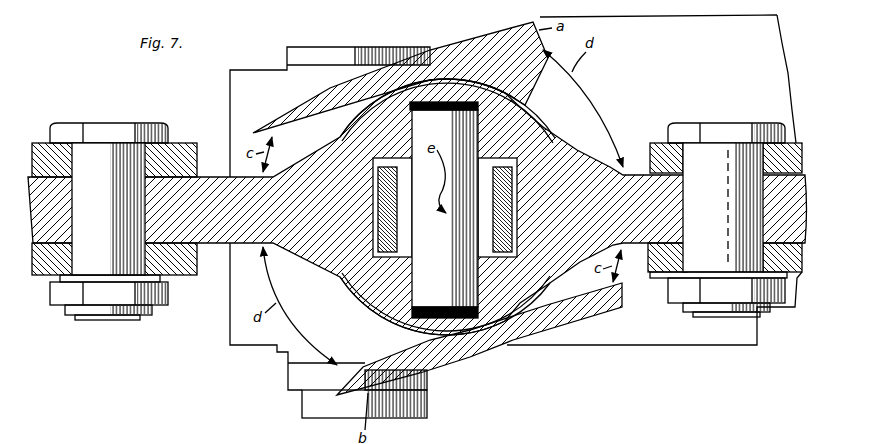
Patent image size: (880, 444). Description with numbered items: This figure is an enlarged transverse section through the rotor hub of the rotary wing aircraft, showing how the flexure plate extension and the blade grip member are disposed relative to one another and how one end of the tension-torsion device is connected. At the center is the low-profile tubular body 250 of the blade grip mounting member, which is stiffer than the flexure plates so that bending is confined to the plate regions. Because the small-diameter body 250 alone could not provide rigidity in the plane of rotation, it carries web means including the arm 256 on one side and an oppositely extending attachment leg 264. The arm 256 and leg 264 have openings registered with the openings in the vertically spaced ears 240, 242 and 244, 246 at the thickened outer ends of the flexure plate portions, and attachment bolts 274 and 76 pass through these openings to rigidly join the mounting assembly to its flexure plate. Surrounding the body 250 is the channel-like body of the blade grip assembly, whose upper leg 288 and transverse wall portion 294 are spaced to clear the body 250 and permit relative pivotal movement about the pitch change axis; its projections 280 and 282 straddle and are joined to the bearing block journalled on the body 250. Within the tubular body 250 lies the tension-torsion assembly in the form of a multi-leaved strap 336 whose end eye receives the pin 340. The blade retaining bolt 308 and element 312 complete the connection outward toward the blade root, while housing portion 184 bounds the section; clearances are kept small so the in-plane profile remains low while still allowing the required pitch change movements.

The bolt 76 is at (730, 128).
The housing 184 is at (779, 20).
The vertically spaced ear 240 is at (183, 148).
The vertically spaced ear 242 is at (181, 272).
The vertically spaced ear 244 is at (793, 140).
The vertically spaced ear 246 is at (797, 278).
The tubular body portion 250 is at (533, 117).
The arm 256 is at (214, 237).
The attachment leg 264 is at (667, 180).
The attachment bolt 274 is at (102, 160).
The projection 280 is at (474, 50).
The projection 282 is at (494, 347).
The upper leg 288 is at (411, 343).
The transverse wall portion 294 is at (243, 113).
The blade retaining bolt 308 is at (340, 412).
The bolt stub 312 is at (448, 407).
The multi-leaved strap 336 is at (377, 242).
The pin 340 is at (450, 135).